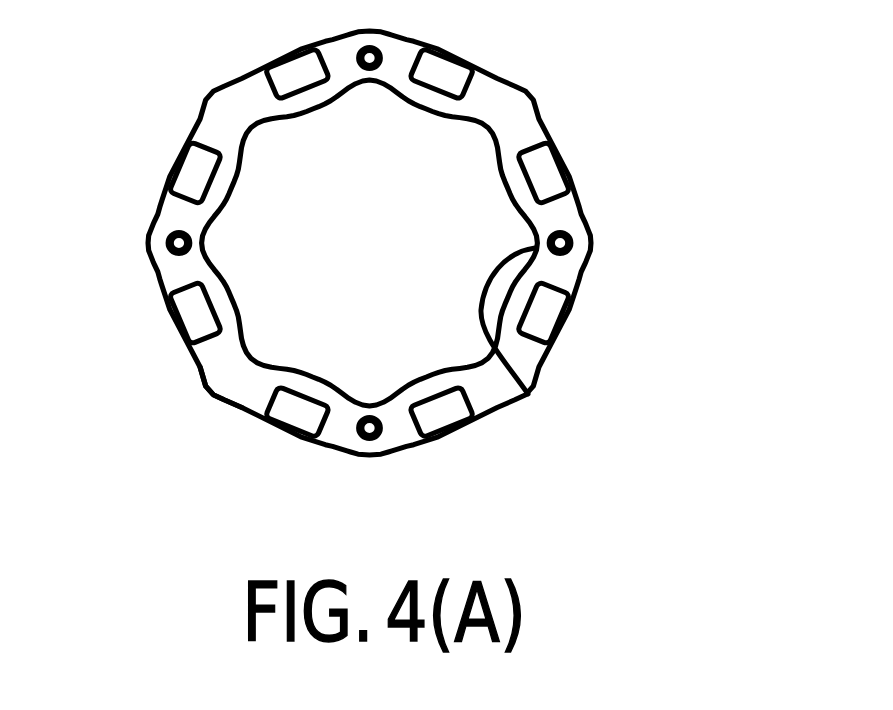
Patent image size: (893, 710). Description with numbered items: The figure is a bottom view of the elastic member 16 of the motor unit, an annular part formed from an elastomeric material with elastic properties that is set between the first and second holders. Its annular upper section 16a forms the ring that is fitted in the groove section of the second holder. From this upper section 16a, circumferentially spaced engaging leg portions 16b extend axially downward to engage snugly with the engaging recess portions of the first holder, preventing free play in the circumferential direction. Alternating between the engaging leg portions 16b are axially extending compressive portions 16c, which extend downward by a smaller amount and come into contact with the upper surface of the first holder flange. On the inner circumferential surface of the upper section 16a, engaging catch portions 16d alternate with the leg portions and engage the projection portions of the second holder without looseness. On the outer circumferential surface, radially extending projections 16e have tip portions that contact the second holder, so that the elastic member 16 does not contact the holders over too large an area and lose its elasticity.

The elastic member 16 is at (578, 72).
The annular upper section 16a is at (563, 210).
The engaging leg portions 16b is at (548, 317).
The compressive portions 16c is at (387, 436).
The engaging catch portions 16d is at (528, 394).
The radially extending projections 16e is at (207, 392).